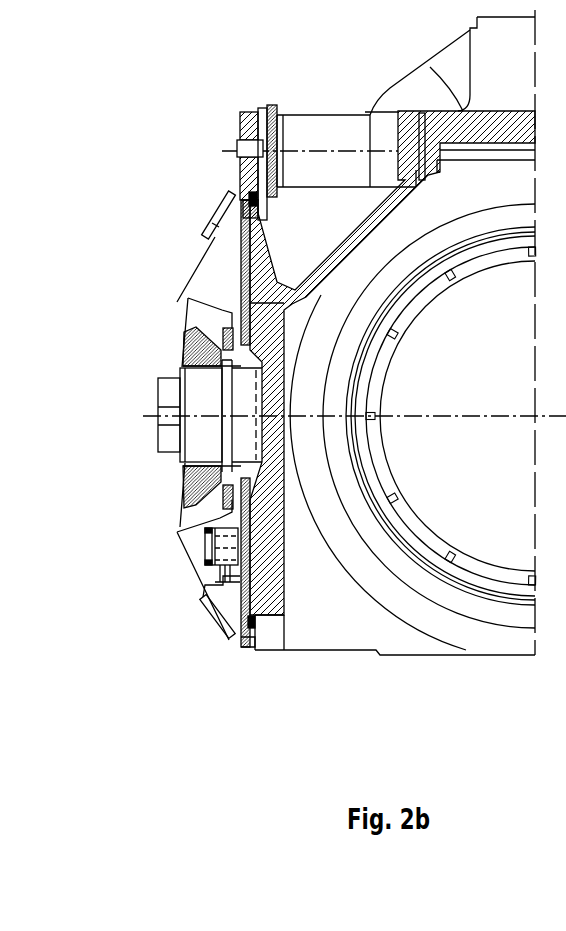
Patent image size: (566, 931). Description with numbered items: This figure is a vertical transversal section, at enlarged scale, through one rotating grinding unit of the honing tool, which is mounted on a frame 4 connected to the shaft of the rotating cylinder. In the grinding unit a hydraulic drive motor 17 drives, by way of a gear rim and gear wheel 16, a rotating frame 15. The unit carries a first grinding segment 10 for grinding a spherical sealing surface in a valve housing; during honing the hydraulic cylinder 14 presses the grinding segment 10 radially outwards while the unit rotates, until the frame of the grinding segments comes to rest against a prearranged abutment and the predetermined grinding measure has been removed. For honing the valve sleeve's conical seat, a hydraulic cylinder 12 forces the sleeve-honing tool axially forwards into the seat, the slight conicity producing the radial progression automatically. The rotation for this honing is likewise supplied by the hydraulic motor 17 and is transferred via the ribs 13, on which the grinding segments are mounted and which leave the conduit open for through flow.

The frame 4 is at (245, 600).
The first grinding segment 10 is at (220, 595).
The hydraulic cylinder 12 is at (0, 343).
The ribs 13 is at (0, 212).
The hydraulic cylinder 14 is at (228, 548).
The rotating frame 15 is at (237, 203).
The gear rim and gear wheel 16 is at (245, 198).
The hydraulic drive motor 17 is at (323, 131).